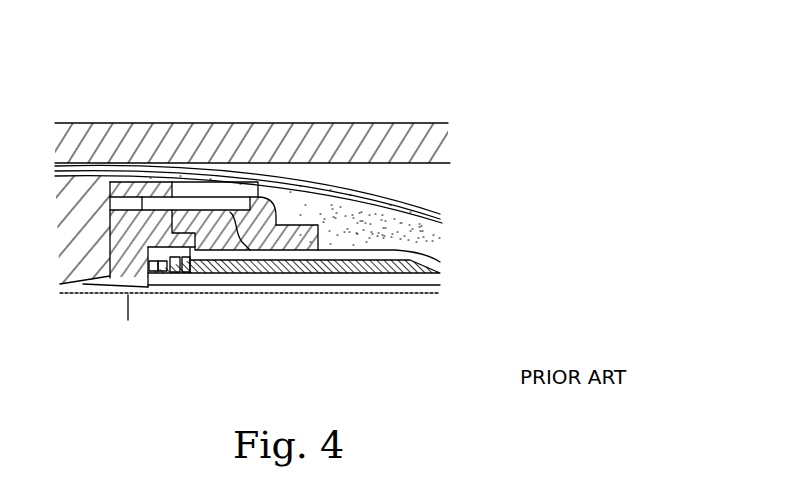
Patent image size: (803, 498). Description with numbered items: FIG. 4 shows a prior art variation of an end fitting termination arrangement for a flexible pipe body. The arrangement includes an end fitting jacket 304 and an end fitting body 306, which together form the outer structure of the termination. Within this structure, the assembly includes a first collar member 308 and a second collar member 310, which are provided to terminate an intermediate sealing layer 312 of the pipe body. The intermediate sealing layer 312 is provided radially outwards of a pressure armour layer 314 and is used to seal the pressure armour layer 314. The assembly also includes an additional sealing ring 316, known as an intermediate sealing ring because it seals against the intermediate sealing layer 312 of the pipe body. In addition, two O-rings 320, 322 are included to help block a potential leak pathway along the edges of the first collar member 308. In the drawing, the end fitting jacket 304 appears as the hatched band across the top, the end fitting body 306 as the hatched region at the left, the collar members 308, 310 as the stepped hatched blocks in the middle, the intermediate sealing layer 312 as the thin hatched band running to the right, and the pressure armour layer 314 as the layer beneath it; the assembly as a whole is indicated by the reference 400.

The end fitting jacket 304 is at (82, 134).
The end fitting body 306 is at (80, 219).
The first collar member 308 is at (152, 240).
The second collar member 310 is at (218, 228).
The intermediate sealing layer 312 is at (432, 259).
The pressure armour layer 314 is at (432, 281).
The intermediate sealing ring 316 is at (261, 200).
The O-ring 320 is at (111, 223).
The O-ring 322 is at (170, 223).
The prior art connector assembly 400 is at (76, 300).